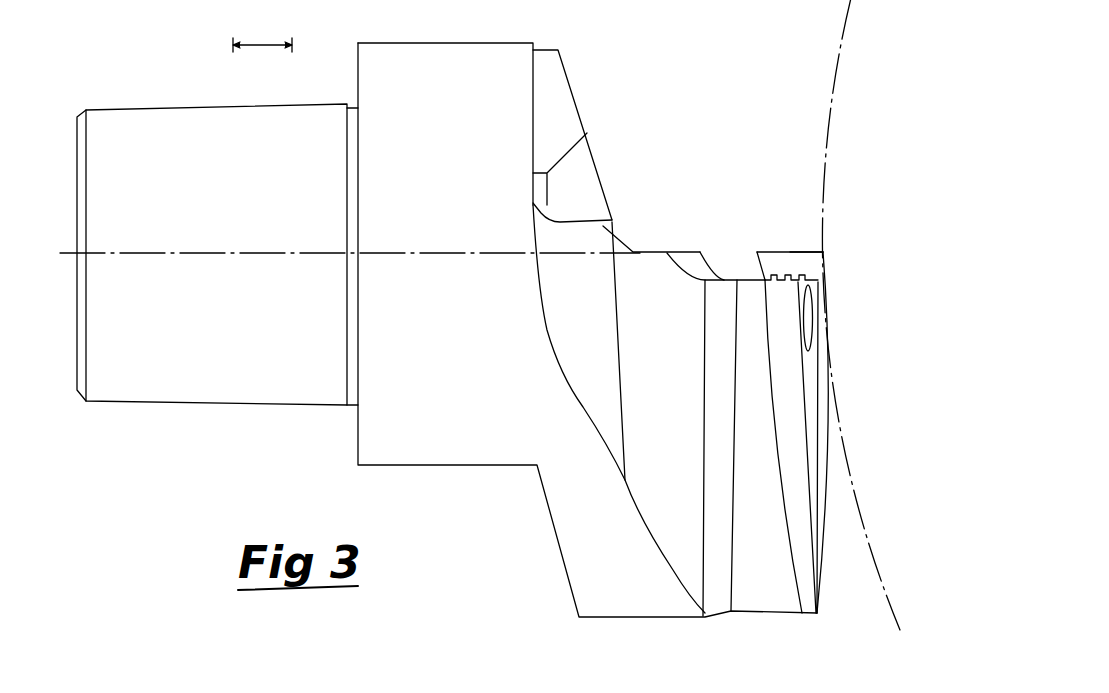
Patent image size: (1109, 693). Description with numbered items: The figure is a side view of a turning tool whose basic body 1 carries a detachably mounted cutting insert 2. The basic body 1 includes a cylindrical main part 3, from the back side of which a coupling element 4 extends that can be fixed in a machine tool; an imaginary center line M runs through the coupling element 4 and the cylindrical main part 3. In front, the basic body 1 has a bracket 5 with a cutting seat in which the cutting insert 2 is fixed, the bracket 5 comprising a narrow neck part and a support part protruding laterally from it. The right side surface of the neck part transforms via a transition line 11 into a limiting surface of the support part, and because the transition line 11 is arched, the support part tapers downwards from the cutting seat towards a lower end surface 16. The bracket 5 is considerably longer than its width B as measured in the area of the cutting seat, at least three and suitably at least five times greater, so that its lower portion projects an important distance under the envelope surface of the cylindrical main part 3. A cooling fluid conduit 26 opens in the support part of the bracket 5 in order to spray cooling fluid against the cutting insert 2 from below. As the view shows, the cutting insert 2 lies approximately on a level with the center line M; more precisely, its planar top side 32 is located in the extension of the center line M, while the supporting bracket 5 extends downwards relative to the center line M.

The basic body 1 is at (428, 474).
The cutting insert 2 is at (788, 262).
The cylindrical main part 3 is at (457, 58).
The coupling element 4 is at (192, 392).
The bracket 5 is at (743, 266).
The transition line 11 is at (782, 493).
The lower end surface 16 is at (709, 0).
The cooling fluid conduit 26 is at (806, 326).
The top side 32 is at (806, 250).
The center line M is at (256, 258).
The width B is at (262, 34).